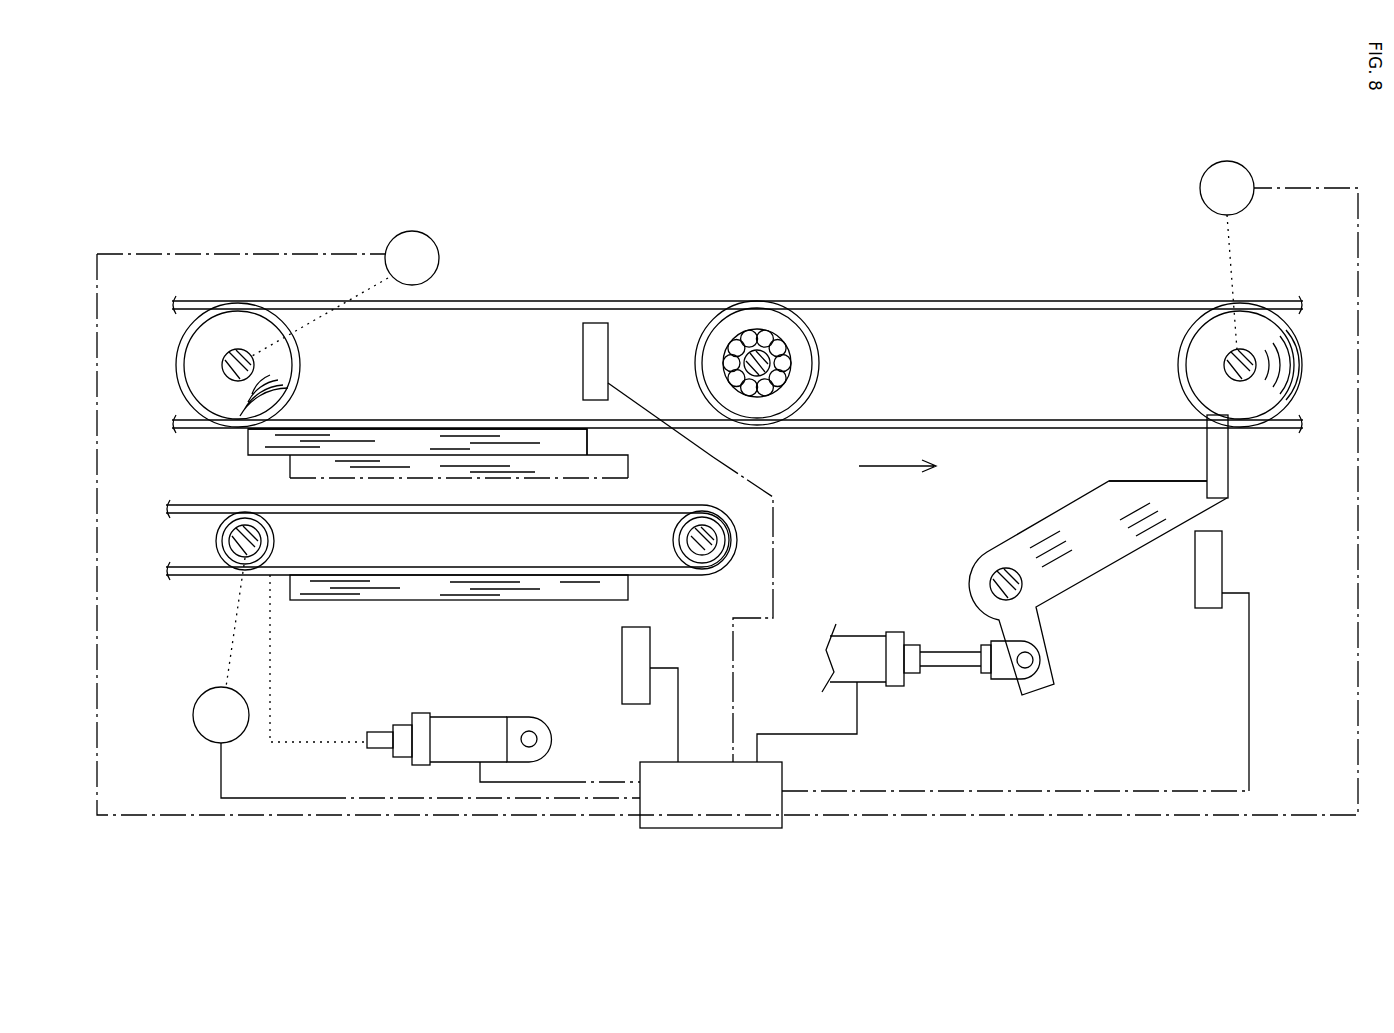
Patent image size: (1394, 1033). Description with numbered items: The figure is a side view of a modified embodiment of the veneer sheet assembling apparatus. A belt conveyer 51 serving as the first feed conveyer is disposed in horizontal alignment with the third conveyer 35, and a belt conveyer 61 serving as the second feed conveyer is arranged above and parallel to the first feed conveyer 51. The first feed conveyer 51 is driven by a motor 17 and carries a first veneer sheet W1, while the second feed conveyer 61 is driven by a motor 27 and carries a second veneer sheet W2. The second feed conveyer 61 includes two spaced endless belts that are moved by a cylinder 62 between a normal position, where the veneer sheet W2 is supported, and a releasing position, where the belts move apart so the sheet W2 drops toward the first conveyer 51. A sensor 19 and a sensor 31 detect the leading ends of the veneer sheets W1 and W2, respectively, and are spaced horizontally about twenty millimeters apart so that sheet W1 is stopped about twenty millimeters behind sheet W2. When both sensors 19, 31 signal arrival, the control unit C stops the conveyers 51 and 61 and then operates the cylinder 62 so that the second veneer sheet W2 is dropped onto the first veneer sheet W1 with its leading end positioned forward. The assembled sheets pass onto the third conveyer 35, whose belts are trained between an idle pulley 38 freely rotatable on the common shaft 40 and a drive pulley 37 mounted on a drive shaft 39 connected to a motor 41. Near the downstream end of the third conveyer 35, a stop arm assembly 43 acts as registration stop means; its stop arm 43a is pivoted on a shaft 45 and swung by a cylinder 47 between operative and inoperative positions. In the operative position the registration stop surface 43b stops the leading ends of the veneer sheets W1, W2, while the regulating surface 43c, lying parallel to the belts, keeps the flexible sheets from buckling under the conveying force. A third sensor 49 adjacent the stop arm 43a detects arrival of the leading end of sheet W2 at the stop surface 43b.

The motor 17 is at (358, 329).
The sensor 19 is at (587, 360).
The motor 27 is at (197, 697).
The sensor 31 is at (627, 668).
The third conveyer 35 is at (940, 418).
The drive pulley 37 is at (1198, 368).
The idle pulley 38 is at (713, 353).
The drive shaft 39 is at (1255, 352).
The shaft 40 is at (768, 348).
The motor 41 is at (1200, 190).
The stop arm assembly 43 is at (1101, 564).
The stop arm 43a is at (1031, 545).
The registration stop surface 43b is at (1207, 450).
The regulating surface 43c is at (1154, 481).
The shaft 45 is at (990, 582).
The cylinder 47 is at (866, 643).
The third sensor 49 is at (1207, 597).
The belt conveyer 51 is at (545, 428).
The belt conveyer 61 is at (547, 570).
The cylinder 62 is at (477, 725).
The first veneer sheet W1 is at (250, 438).
The second veneer sheet W2 is at (510, 592).
The control unit C is at (757, 787).